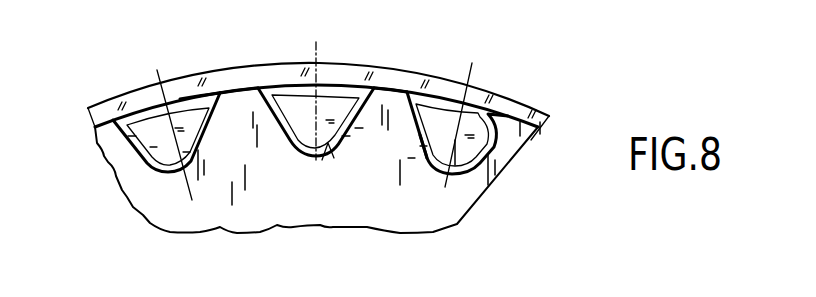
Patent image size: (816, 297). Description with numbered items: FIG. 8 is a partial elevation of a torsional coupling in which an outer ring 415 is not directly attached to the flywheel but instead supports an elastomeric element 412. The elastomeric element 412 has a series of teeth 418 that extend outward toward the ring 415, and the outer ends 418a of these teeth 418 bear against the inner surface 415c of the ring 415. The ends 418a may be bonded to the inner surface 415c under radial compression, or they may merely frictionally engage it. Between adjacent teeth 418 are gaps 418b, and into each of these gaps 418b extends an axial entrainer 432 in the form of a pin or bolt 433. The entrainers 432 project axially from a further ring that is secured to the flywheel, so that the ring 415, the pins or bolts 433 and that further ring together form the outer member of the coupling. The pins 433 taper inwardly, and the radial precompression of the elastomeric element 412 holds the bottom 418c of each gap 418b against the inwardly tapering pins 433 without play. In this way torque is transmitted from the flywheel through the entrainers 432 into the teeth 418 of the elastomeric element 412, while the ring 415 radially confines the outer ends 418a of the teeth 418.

The elastomeric element 412 is at (350, 198).
The ring 415 is at (437, 90).
The inner surface of the ring 415c is at (432, 150).
The teeth 418 is at (242, 115).
The outer ends of the teeth 418a is at (240, 83).
The gaps between the teeth 418b is at (196, 92).
The bottom of the gap 418c is at (326, 150).
The axial entrainers 432 is at (291, 105).
The pins or bolts 433 is at (158, 170).